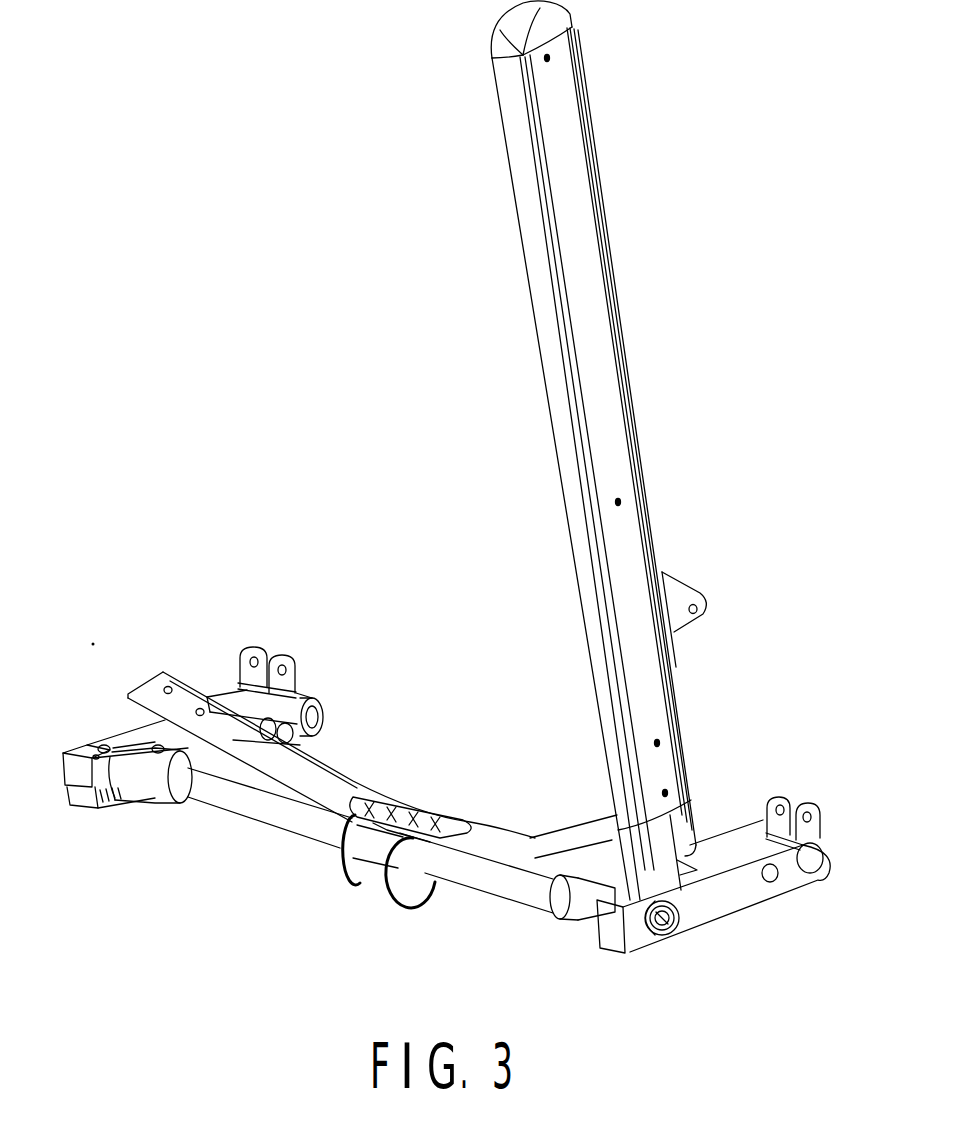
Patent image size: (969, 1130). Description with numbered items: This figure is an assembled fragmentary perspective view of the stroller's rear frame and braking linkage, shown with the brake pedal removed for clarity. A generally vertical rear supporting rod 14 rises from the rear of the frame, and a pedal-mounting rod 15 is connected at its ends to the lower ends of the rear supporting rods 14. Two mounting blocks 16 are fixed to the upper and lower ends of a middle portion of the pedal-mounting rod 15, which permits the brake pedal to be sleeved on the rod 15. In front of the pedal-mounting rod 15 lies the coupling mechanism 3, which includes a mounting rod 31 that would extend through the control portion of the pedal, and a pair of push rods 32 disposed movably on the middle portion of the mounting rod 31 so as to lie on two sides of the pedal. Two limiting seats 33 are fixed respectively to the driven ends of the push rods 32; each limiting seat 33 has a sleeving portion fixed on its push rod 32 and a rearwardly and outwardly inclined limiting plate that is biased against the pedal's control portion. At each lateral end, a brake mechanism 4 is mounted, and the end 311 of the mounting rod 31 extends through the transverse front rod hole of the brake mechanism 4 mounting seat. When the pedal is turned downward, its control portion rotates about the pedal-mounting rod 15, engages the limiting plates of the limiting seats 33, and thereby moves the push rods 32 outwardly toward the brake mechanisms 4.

The rear supporting rod 14 is at (588, 296).
The pedal-mounting rod 15 is at (162, 686).
The brake mechanism 4 is at (228, 697).
The mounting block 16 is at (440, 826).
The coupling mechanism 3 is at (453, 893).
The mounting rod 31 is at (376, 848).
The push rod 32 is at (268, 818).
The limiting seat 33 is at (328, 830).
The end of the mounting rod 311 is at (664, 924).